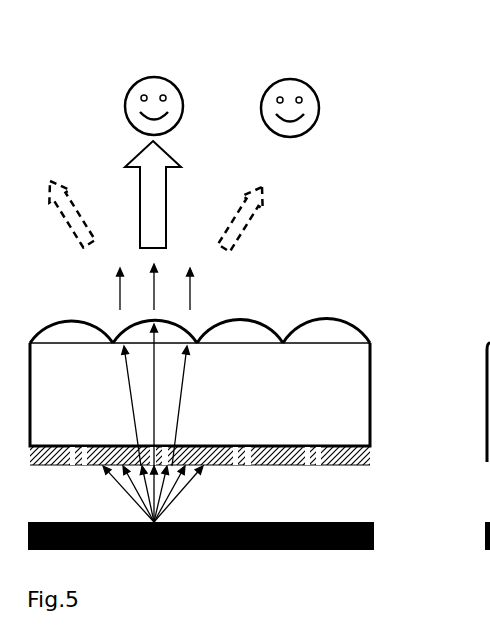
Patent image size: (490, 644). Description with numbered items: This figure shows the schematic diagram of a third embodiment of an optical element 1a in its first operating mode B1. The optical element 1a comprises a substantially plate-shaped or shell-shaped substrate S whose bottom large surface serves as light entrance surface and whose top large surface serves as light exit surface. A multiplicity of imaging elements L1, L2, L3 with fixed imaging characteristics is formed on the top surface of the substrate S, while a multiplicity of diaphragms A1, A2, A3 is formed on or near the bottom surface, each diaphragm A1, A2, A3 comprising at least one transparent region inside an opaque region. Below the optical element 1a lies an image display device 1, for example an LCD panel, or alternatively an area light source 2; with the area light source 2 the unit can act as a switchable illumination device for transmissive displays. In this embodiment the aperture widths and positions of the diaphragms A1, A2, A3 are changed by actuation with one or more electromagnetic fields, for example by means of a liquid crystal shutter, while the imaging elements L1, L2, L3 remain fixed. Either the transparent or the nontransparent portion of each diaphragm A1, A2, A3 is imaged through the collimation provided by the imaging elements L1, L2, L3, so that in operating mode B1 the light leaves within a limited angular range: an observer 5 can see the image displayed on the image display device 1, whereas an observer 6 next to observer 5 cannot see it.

The observer 5 is at (154, 91).
The observer 6 is at (290, 92).
The first operating mode B1 is at (153, 129).
The imaging element L1 is at (186, 334).
The imaging element L2 is at (260, 324).
The imaging element L3 is at (334, 319).
The diaphragm A1 is at (197, 462).
The diaphragm A2 is at (242, 459).
The diaphragm A3 is at (326, 473).
The substrate S is at (200, 394).
The optical element 1a is at (242, 310).
The image display device 1 is at (233, 508).
The area light source 2 is at (233, 508).